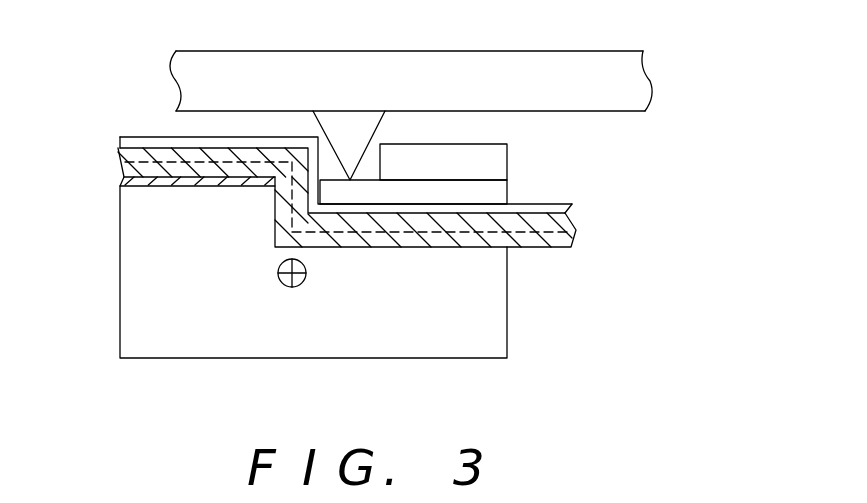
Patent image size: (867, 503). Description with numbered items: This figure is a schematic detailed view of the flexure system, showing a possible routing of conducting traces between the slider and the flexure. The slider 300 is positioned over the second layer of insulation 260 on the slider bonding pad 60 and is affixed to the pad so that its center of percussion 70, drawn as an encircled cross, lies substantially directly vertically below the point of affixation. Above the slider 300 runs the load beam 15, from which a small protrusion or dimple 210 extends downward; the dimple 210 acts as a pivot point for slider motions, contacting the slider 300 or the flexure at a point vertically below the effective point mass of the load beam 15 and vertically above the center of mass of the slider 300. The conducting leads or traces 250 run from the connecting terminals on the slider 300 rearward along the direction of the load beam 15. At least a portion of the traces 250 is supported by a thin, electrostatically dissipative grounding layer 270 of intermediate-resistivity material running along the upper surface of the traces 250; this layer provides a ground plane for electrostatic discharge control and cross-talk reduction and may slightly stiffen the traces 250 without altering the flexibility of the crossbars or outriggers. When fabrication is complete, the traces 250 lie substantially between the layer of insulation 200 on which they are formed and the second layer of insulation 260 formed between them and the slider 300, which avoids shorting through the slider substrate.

The load beam 15 is at (620, 83).
The dimple 210 is at (350, 124).
The slider bonding pad 60 is at (487, 148).
The electrostatically dissipative grounding layer 270 is at (143, 142).
The conducting leads (traces) 250 is at (120, 160).
The layer of insulation 200 is at (552, 247).
The second layer of insulation 260 is at (141, 181).
The slider 300 is at (140, 280).
The center of percussion 70 is at (297, 285).